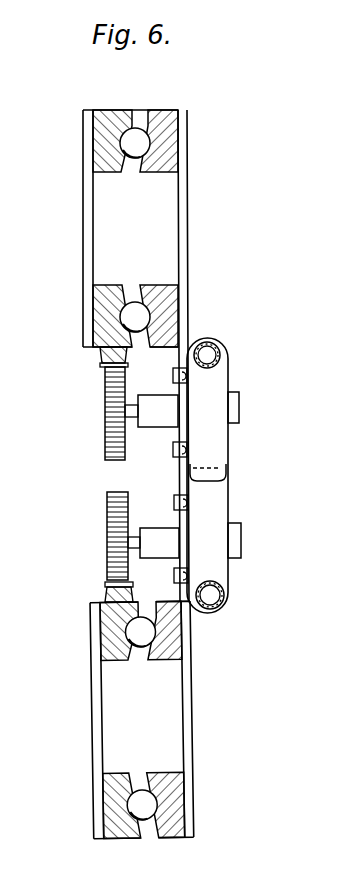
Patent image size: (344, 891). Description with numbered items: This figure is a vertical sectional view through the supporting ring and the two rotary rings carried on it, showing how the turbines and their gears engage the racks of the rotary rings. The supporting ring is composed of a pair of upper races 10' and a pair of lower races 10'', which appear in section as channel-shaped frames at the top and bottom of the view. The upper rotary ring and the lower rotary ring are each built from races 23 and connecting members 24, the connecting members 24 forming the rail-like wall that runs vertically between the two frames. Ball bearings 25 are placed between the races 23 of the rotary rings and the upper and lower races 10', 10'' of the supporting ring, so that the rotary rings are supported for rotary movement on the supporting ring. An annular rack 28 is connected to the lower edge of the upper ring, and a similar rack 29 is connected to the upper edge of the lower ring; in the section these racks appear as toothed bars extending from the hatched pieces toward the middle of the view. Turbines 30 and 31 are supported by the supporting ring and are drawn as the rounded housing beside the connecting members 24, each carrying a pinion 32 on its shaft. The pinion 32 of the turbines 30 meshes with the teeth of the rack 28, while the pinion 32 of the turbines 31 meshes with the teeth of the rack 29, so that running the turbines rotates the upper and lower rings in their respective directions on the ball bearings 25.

The upper races 10' is at (124, 228).
The lower races 10'' is at (175, 719).
The races 23 is at (163, 133).
The connecting members 24 is at (255, 231).
The ball bearings 25 is at (135, 140).
The annular rack 28 is at (103, 353).
The rack 29 is at (107, 597).
The turbines 30 is at (212, 442).
The turbines 31 is at (212, 513).
The pinion 32 is at (115, 415).